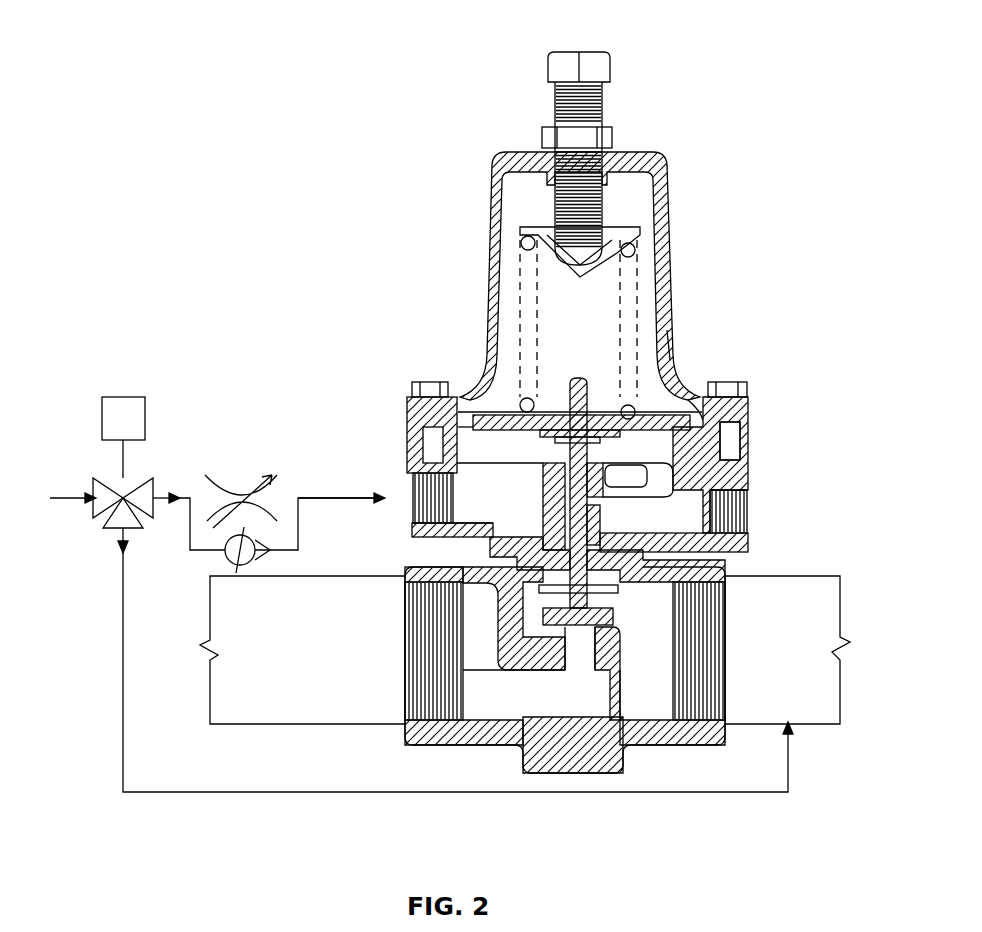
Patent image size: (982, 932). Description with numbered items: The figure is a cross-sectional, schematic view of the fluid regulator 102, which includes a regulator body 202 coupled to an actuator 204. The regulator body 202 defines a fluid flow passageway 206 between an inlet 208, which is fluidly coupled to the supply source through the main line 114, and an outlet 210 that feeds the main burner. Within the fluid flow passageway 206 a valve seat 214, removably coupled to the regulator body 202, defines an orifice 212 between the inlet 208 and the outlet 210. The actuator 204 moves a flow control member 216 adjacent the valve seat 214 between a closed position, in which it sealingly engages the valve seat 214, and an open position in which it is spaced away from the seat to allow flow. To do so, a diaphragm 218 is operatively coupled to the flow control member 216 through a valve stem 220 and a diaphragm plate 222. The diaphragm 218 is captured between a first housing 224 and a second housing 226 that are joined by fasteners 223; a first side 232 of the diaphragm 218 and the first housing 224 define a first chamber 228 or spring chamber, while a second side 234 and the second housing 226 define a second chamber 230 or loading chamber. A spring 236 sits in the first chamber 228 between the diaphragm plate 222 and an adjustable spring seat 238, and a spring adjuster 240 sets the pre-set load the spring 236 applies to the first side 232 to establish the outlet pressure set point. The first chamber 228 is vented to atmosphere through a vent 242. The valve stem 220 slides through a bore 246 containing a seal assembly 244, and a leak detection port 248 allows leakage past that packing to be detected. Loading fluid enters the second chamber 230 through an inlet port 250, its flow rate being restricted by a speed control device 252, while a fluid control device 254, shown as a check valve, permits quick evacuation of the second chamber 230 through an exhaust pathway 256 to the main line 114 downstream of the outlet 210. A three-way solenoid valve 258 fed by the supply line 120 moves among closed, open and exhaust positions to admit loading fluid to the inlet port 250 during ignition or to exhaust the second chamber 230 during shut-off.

The fluid regulator 102 is at (358, 44).
The main line 114 is at (783, 577).
The pressurized supply line 120 is at (65, 503).
The regulator body 202 is at (567, 777).
The actuator 204 is at (750, 483).
The fluid flow passageway 206 is at (525, 693).
The inlet 208 is at (405, 650).
The outlet 210 is at (725, 640).
The orifice 212 is at (588, 662).
The valve seat 214 is at (640, 675).
The flow control member 216 is at (613, 615).
The diaphragm 218 is at (722, 420).
The valve stem 220 is at (578, 452).
The diaphragm plate 222 is at (468, 414).
The fasteners 223 is at (440, 380).
The first housing 224 is at (490, 226).
The second housing 226 is at (755, 445).
The first chamber 228 is at (599, 346).
The second chamber 230 is at (533, 461).
The first side 232 is at (456, 426).
The second side 234 is at (418, 448).
The spring 236 is at (640, 300).
The adjustable spring seat 238 is at (640, 227).
The spring adjuster 240 is at (594, 72).
The vent 242 is at (672, 360).
The seal assembly 244 is at (598, 468).
The bore 246 is at (592, 530).
The leak detection port 248 is at (752, 513).
The inlet port 250 is at (413, 504).
The speed control device 252 is at (246, 492).
The fluid control device 254 is at (226, 560).
The exhaust pathway 256 is at (327, 793).
The solenoid valve 258 is at (120, 396).